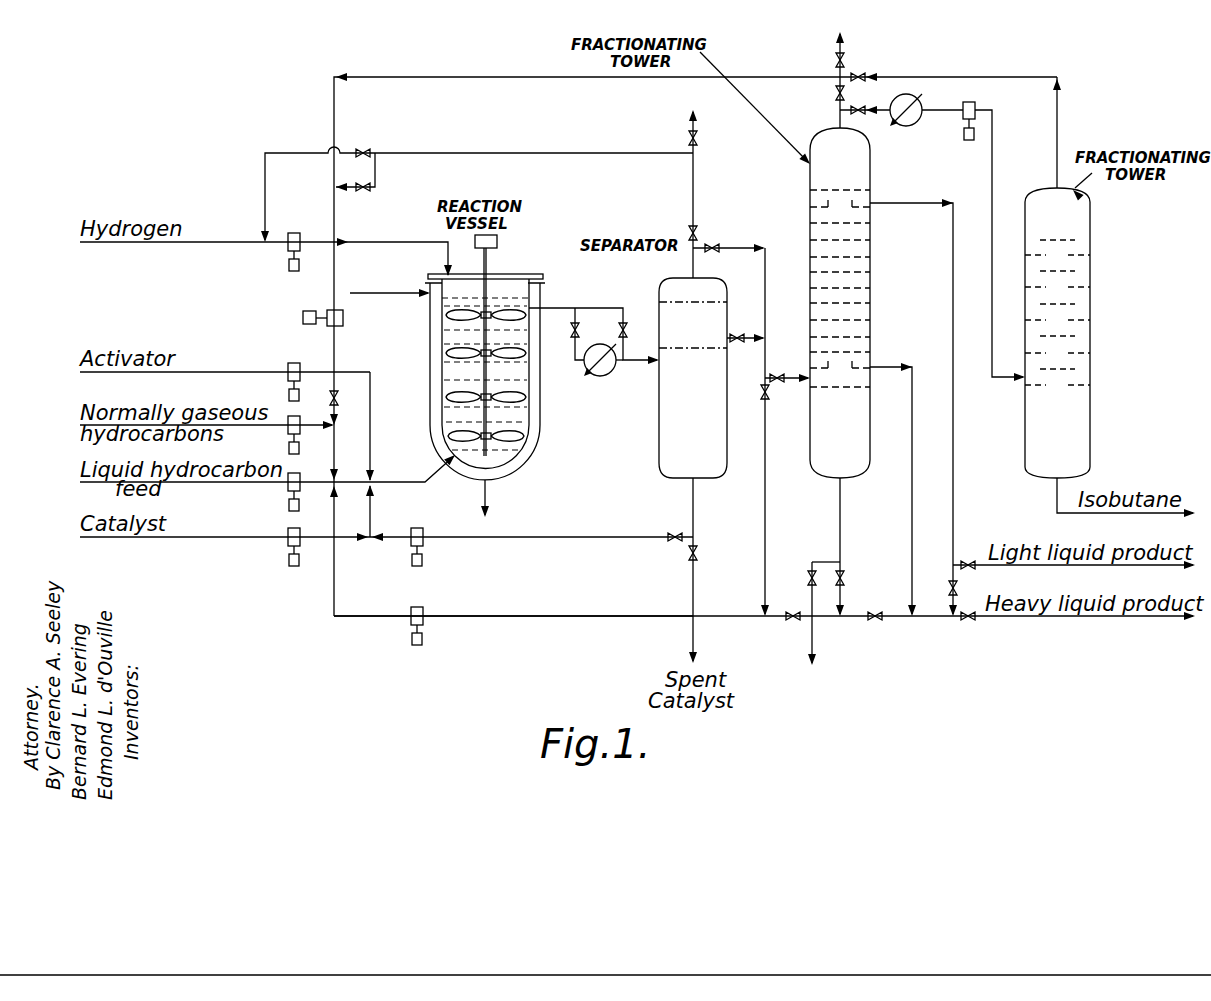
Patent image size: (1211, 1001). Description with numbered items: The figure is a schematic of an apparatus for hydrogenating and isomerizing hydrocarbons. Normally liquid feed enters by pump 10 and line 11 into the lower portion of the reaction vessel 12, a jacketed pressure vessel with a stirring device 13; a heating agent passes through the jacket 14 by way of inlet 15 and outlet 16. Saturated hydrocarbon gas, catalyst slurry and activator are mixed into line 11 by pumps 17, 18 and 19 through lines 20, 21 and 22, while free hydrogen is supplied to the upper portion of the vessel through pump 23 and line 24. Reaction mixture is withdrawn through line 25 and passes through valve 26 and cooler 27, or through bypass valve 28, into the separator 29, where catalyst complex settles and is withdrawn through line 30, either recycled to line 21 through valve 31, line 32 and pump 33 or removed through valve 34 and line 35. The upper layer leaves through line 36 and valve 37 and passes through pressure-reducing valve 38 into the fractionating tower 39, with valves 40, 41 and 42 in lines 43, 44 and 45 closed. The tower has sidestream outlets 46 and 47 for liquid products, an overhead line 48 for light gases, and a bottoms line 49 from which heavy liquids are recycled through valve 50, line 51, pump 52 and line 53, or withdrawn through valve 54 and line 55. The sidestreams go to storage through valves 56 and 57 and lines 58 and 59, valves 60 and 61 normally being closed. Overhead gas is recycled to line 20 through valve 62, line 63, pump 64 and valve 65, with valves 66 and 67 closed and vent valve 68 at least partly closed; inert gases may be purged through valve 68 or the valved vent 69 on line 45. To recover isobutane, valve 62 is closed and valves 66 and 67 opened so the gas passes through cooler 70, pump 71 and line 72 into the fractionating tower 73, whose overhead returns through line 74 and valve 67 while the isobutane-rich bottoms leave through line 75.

The pump 10 is at (290, 509).
The line 11 is at (388, 481).
The reaction vessel 12 is at (505, 276).
The stirring device 13 is at (497, 241).
The jacket 14 is at (428, 340).
The inlet 15 is at (396, 293).
The outlet 16 is at (487, 486).
The pump 17 is at (288, 452).
The pump 18 is at (296, 568).
The pump 19 is at (294, 362).
The line 20 is at (337, 461).
The line 21 is at (372, 507).
The line 22 is at (372, 419).
The pump 23 is at (296, 235).
The line 24 is at (382, 243).
The line 25 is at (600, 306).
The valve 26 is at (572, 340).
The cooler 27 is at (600, 380).
The bypass valve 28 is at (640, 325).
The separator 29 is at (660, 284).
The line 30 is at (695, 503).
The valve 31 is at (668, 534).
The line 32 is at (533, 538).
The pump 33 is at (424, 566).
The valve 34 is at (697, 556).
The line 35 is at (690, 635).
The line 36 is at (729, 261).
The valve 37 is at (716, 246).
The valve 38 is at (779, 375).
The fractionating tower 39 is at (810, 222).
The valve 40 is at (770, 395).
The valve 41 is at (750, 322).
The valve 42 is at (697, 232).
The line 43 is at (768, 508).
The line 44 is at (748, 358).
The line 45 is at (603, 153).
The sidestream outlet 46 is at (913, 433).
The sidestream outlet 47 is at (952, 297).
The line 48 is at (838, 118).
The line 49 is at (842, 534).
The valve 50 is at (782, 620).
The line 51 is at (520, 618).
The pump 52 is at (422, 643).
The line 53 is at (336, 560).
The valve 54 is at (808, 578).
The line 55 is at (815, 648).
The valve 56 is at (967, 620).
The valve 57 is at (966, 560).
The line 58 is at (1128, 618).
The line 59 is at (1140, 568).
The valve 60 is at (875, 620).
The valve 61 is at (949, 586).
The valve 62 is at (836, 93).
The line 63 is at (598, 77).
The pump 64 is at (302, 316).
The valve 65 is at (337, 402).
The valve 66 is at (860, 108).
The valve 67 is at (864, 74).
The valve 68 is at (836, 58).
The valved vent 69 is at (696, 132).
The cooler 70 is at (920, 126).
The pump 71 is at (967, 141).
The line 72 is at (992, 250).
The fractionating tower 73 is at (1052, 186).
The line 74 is at (1060, 124).
The line 75 is at (1056, 496).